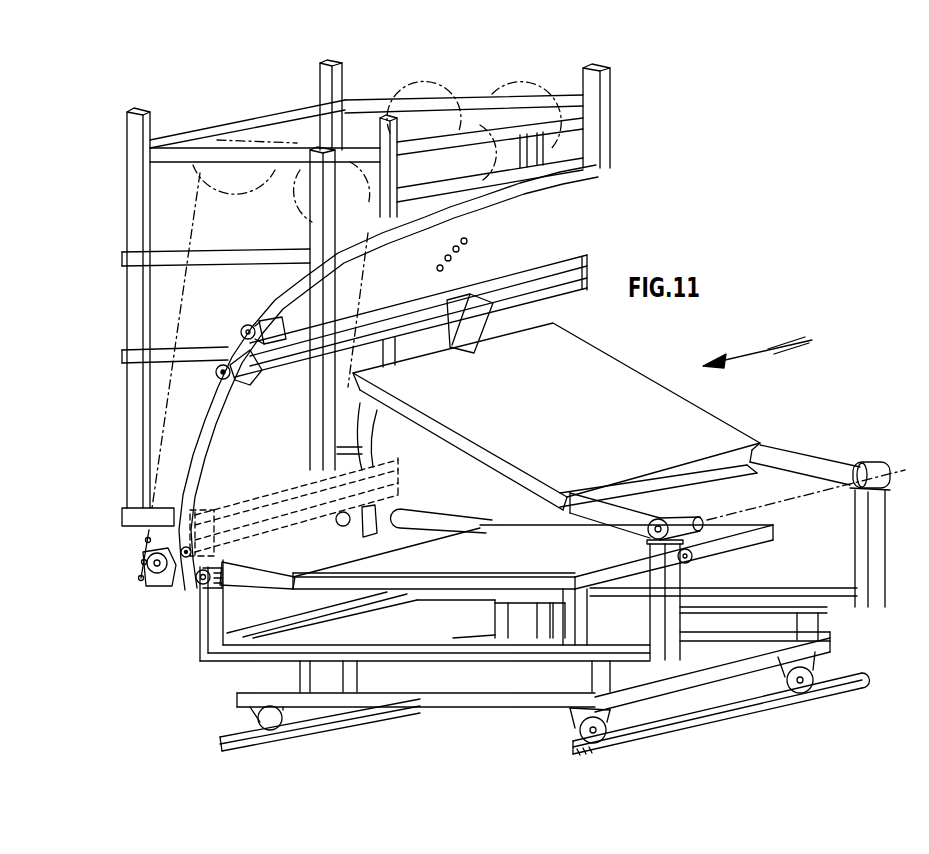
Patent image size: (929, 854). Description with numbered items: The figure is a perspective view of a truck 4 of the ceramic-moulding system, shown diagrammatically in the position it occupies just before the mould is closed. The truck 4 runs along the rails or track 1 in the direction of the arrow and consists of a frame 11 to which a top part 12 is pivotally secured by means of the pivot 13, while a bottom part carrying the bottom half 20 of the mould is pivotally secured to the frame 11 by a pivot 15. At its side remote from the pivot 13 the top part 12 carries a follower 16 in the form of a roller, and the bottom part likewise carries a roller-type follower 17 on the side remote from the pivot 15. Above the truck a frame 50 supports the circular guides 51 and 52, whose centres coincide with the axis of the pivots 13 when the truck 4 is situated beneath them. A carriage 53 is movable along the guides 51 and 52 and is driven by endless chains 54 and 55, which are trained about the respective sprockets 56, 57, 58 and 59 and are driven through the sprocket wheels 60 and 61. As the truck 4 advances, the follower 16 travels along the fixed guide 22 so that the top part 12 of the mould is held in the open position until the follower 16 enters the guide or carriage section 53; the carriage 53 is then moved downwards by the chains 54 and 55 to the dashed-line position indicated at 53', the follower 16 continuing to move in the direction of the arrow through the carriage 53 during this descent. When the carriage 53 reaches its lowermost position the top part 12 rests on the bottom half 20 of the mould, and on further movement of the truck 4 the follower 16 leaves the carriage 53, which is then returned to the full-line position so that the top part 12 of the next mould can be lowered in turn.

The track 1 is at (327, 737).
The truck 4 is at (473, 705).
The frame 11 is at (257, 653).
The top part 12 is at (700, 405).
The pivot 13 is at (700, 515).
The pivot 15 is at (196, 592).
The follower 16 is at (467, 297).
The follower 17 is at (690, 561).
The bottom half of the mould 20 is at (327, 588).
The fixed guide 22 is at (582, 262).
The frame 50 is at (185, 157).
The circular guide 51 is at (267, 297).
The circular guide 52 is at (493, 222).
The carriage 53 is at (401, 353).
The dashed line position of the carriage 53' is at (289, 507).
The endless chain 54 is at (188, 220).
The endless chain 55 is at (470, 93).
The sprocket 56 is at (227, 133).
The sprocket 57 is at (348, 178).
The sprocket 58 is at (405, 88).
The sprocket 59 is at (488, 157).
The sprocket wheel 60 is at (142, 576).
The sprocket wheel 61 is at (343, 518).